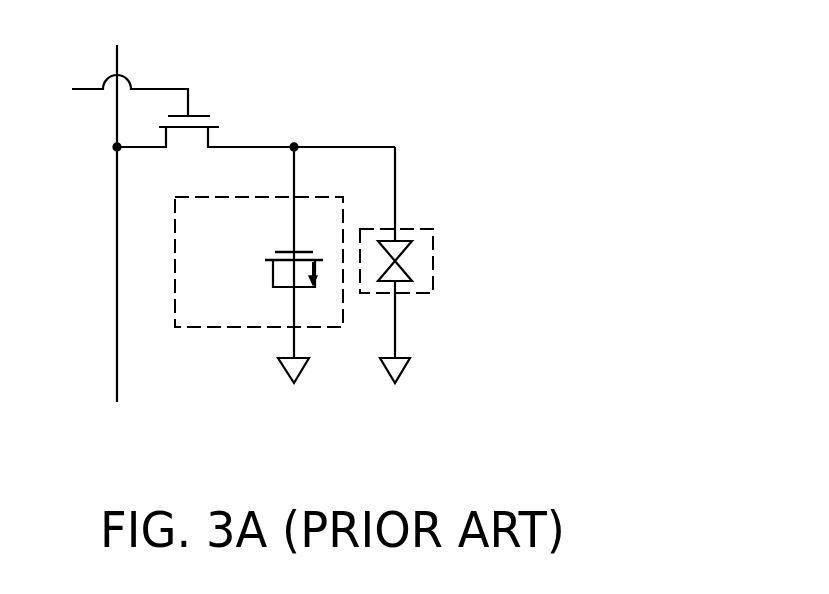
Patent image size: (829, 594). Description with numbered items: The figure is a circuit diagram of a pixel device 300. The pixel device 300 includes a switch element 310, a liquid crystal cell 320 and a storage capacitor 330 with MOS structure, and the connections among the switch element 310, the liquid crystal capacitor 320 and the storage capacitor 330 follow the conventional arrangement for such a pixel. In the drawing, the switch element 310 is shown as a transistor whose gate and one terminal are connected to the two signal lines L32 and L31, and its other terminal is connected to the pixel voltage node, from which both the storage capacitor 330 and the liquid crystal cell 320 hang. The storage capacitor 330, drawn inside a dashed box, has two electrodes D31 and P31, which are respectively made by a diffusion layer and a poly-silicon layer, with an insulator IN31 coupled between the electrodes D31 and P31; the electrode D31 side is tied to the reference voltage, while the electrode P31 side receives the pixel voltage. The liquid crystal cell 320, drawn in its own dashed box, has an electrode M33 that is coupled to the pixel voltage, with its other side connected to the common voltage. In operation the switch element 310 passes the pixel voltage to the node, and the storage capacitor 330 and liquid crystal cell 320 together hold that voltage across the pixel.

The pixel device 300 is at (518, 432).
The data line L32 is at (120, 59).
The scan line L31 is at (92, 93).
The switch element 310 is at (192, 138).
The storage capacitor 330 is at (258, 283).
The electrode P31 is at (275, 250).
The insulator IN31 is at (276, 256).
The electrode D31 is at (292, 266).
The liquid crystal cell 320 is at (422, 252).
The electrode M33 is at (398, 240).